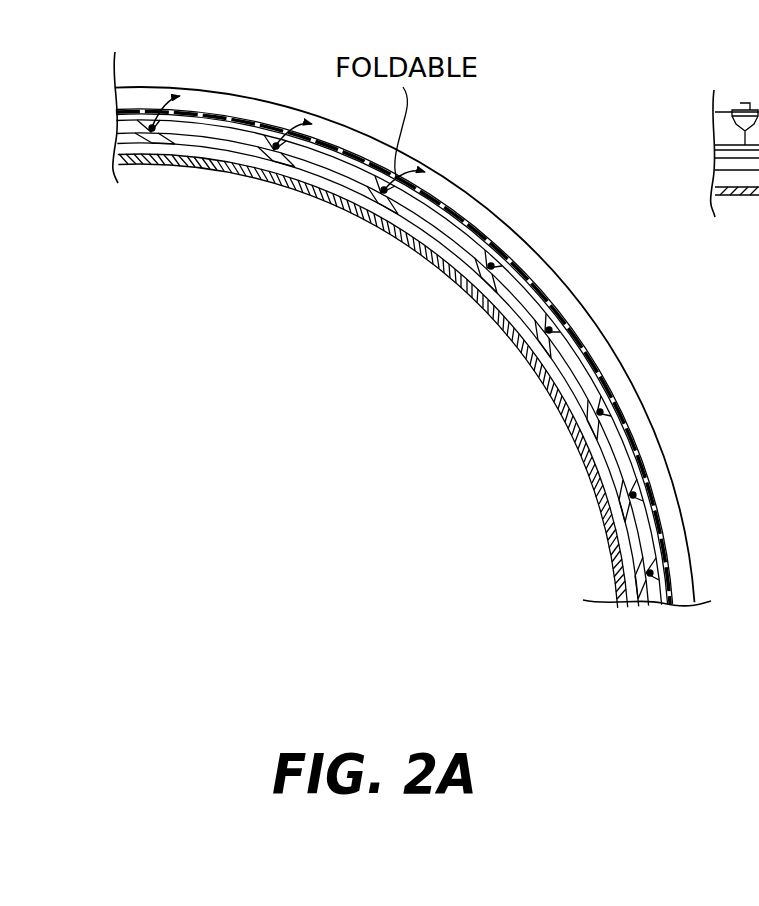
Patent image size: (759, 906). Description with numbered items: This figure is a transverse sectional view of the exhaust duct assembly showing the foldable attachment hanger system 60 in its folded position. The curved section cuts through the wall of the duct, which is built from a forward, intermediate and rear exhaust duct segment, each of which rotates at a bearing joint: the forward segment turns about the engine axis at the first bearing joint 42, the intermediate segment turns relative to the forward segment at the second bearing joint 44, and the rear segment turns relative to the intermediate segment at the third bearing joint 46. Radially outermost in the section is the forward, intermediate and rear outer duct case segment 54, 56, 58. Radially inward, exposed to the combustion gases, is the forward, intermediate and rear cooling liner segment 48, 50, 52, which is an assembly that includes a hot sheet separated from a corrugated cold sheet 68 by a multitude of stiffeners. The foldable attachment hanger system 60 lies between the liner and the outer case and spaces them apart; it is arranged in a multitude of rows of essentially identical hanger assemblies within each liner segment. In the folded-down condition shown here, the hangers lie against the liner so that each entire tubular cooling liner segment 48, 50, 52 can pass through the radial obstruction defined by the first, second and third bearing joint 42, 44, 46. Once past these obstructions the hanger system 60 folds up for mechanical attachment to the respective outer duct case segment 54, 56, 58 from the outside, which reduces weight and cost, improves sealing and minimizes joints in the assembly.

The forward outer duct case segment 54 is at (405, 345).
The intermediate outer duct case segment 56 is at (405, 345).
The rear outer duct case segment 58 is at (510, 226).
The first bearing joint 42 is at (401, 363).
The second bearing joint 44 is at (401, 363).
The third bearing joint 46 is at (600, 269).
The foldable attachment hanger system 60 is at (433, 236).
The corrugated cold sheet 68 is at (397, 235).
The forward cooling liner segment 48 is at (372, 381).
The intermediate cooling liner segment 50 is at (372, 381).
The rear cooling liner segment 52 is at (560, 388).